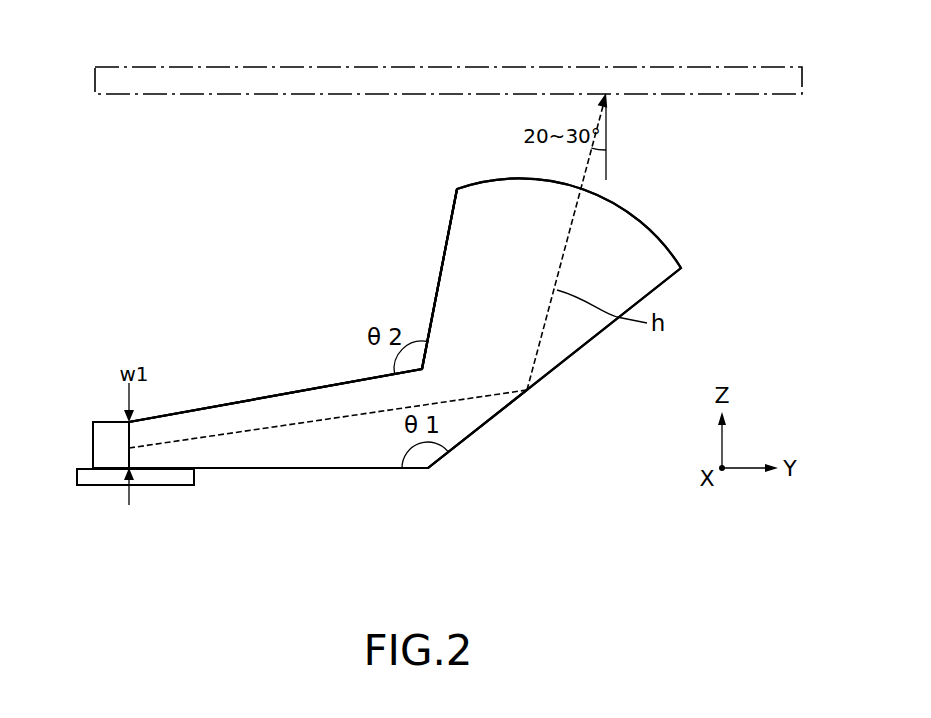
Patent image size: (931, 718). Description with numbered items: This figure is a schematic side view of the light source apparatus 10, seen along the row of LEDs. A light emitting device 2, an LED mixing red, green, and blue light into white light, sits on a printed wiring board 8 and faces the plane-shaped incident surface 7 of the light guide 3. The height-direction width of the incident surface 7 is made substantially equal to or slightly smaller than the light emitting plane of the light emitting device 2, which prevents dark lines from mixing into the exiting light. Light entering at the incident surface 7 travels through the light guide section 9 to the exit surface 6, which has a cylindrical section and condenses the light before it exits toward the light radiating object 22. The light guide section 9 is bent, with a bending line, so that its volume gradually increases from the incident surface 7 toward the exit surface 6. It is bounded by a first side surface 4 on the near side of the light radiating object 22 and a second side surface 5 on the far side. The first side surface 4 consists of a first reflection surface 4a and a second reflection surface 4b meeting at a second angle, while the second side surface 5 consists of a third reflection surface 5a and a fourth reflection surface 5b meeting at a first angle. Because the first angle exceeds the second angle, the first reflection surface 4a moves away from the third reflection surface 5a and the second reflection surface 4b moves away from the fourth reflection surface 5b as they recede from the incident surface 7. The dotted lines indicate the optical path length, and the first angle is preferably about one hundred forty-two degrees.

The light radiating object 22 is at (437, 67).
The light source apparatus 10 is at (296, 186).
The light emitting device 2 is at (103, 434).
The incident surface 7 is at (128, 455).
The printed wiring board 8 is at (98, 483).
The light guide 3 is at (440, 222).
The first side surface 4 is at (273, 288).
The first reflection surface 4a is at (313, 385).
The second reflection surface 4b is at (435, 293).
The exit surface 6 is at (645, 218).
The light guide section 9 is at (563, 350).
The second side surface 5 is at (546, 506).
The third reflection surface 5a is at (387, 469).
The fourth reflection surface 5b is at (485, 431).